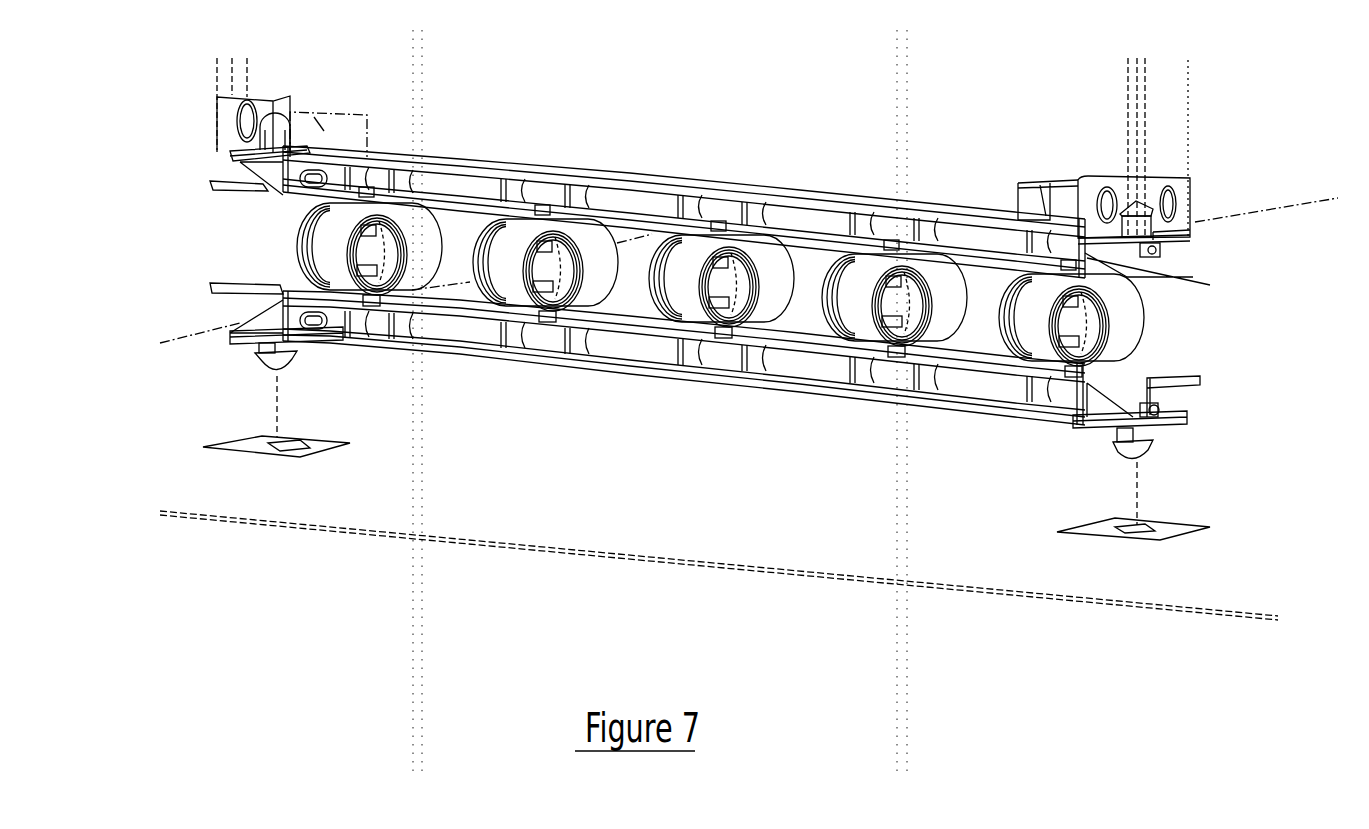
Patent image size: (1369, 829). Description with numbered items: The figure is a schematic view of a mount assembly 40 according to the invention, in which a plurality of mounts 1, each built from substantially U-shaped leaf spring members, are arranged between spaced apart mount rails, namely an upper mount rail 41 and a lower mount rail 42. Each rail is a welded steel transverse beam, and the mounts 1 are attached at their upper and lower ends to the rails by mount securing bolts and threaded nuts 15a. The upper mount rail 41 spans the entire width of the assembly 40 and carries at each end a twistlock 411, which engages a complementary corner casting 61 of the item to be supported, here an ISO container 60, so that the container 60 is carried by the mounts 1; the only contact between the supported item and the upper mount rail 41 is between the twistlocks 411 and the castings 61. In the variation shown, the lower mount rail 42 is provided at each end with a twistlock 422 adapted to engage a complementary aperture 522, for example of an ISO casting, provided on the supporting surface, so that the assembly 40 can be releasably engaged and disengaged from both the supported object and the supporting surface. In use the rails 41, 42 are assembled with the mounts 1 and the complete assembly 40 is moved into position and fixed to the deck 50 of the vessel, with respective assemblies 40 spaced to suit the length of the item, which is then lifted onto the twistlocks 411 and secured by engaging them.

The mount 1 is at (858, 332).
The threaded nut 15a is at (718, 220).
The mount assembly 40 is at (268, 242).
The upper mount rail 41 is at (628, 208).
The lower mount rail 42 is at (630, 347).
The deck 50 is at (868, 564).
The ISO container 60 is at (522, 119).
The corner casting 61 is at (232, 122).
The twistlock 411 is at (1138, 264).
The twistlock 422 is at (265, 348).
The complementary aperture 522 is at (312, 452).